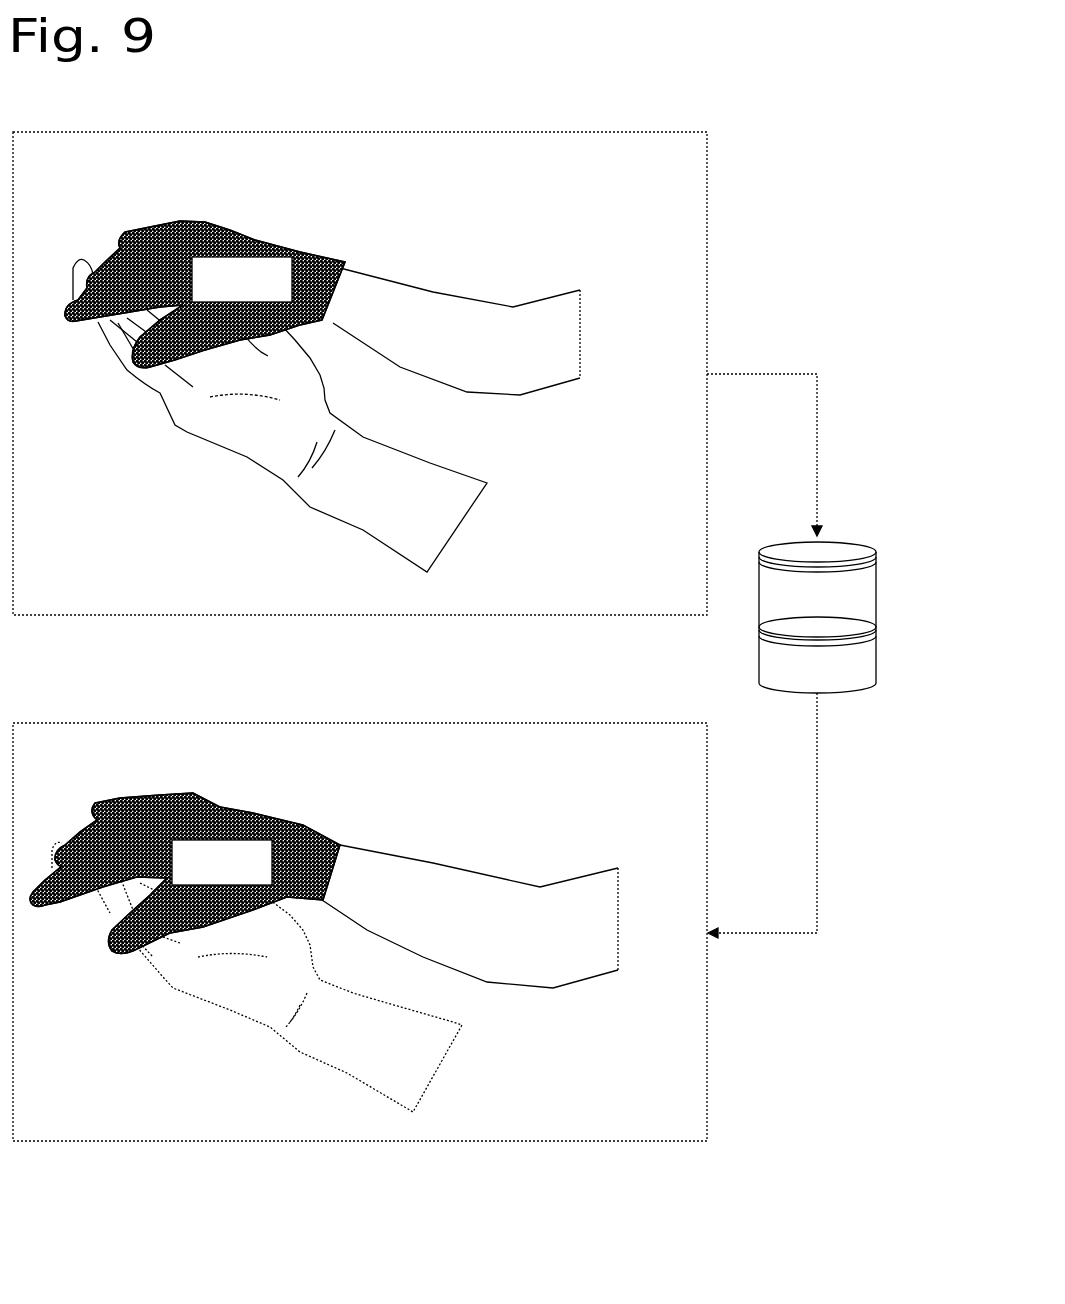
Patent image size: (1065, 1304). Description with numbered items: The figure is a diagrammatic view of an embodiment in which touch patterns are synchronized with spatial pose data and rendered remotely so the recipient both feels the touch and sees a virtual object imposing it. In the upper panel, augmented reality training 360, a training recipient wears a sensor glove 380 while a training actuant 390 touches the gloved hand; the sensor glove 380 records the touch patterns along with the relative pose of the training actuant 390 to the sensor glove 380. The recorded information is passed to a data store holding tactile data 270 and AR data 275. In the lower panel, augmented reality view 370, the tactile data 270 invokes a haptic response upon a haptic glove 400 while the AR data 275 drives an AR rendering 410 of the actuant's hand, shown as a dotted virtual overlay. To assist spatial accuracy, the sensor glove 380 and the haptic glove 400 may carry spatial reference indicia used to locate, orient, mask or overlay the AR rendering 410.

The augmented reality training 360 is at (607, 131).
The augmented reality view 370 is at (562, 722).
The sensor glove 380 is at (336, 271).
The training actuant 390 is at (365, 437).
The haptic glove 400 is at (312, 827).
The AR rendering 410 is at (270, 1033).
The tactile data 270 is at (877, 590).
The AR data 275 is at (877, 666).